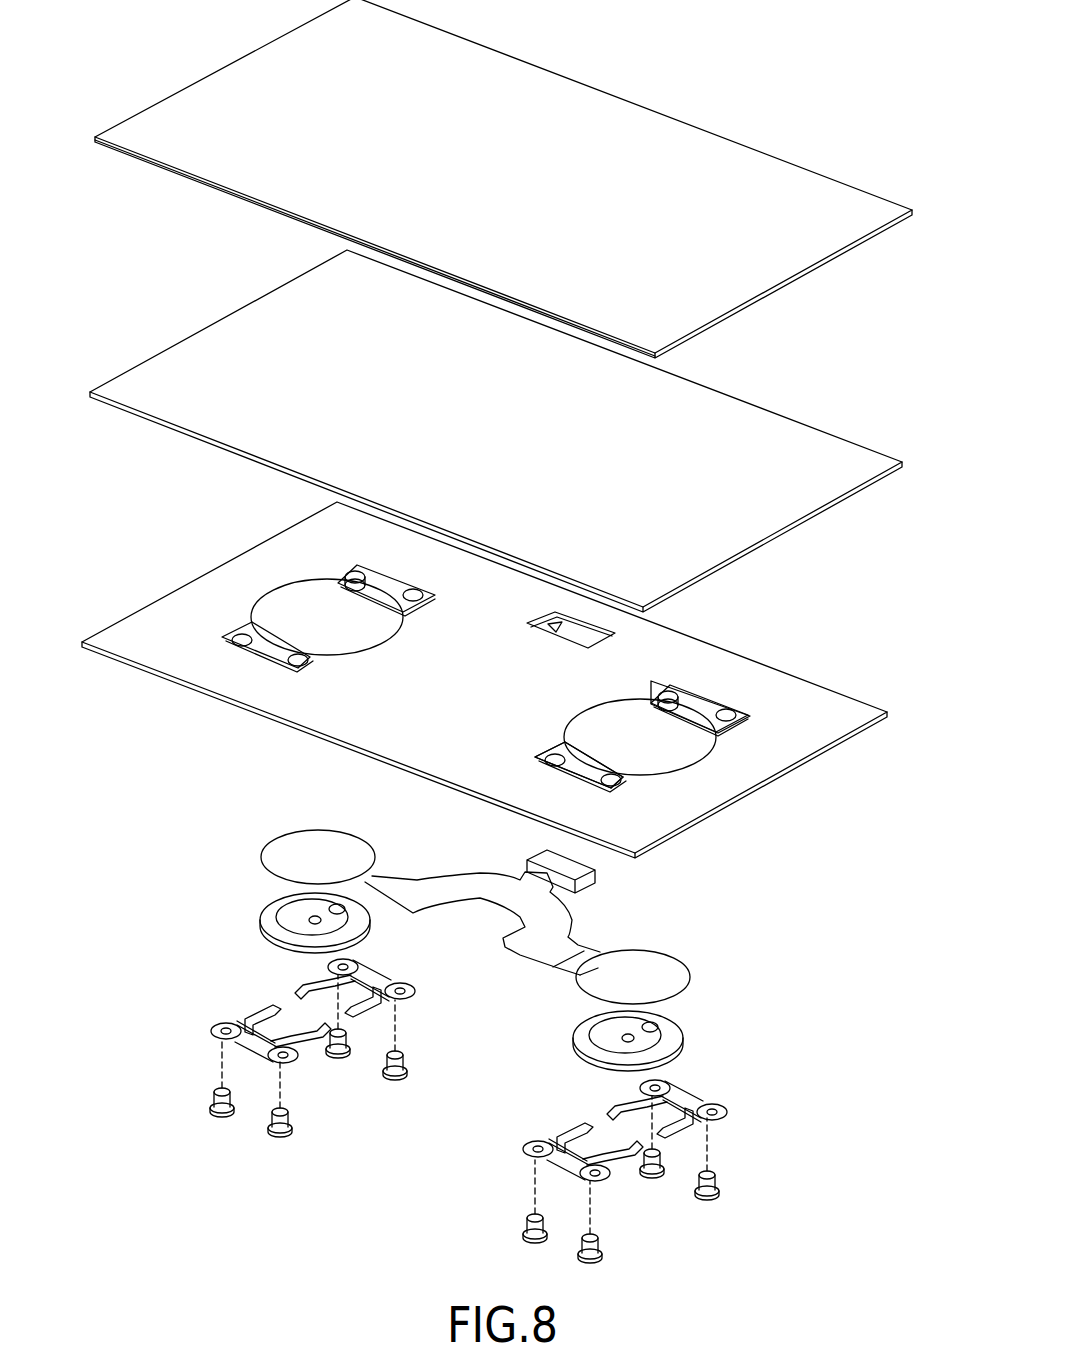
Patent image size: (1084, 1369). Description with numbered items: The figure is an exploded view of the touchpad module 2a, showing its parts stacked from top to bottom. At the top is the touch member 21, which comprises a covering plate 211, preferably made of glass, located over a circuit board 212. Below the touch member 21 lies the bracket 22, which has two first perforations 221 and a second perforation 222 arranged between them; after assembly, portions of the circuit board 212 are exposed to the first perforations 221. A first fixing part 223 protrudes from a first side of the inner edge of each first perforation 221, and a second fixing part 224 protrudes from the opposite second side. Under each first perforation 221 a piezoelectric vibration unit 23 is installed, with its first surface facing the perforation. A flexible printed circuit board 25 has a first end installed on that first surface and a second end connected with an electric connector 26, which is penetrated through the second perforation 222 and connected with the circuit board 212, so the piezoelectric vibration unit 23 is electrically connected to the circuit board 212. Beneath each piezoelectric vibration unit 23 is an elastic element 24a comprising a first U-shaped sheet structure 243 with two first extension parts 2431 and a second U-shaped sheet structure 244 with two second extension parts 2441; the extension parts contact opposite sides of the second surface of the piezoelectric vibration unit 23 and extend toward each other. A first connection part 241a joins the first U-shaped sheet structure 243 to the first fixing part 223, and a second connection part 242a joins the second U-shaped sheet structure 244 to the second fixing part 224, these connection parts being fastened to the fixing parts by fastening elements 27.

The touchpad module 2a is at (790, 77).
The touch member 21 is at (503, 306).
The covering plate 211 is at (812, 192).
The circuit board 212 is at (813, 452).
The bracket 22 is at (484, 680).
The first perforation 221 is at (312, 607).
The second perforation 222 is at (555, 620).
The first fixing part 223 is at (697, 712).
The second fixing part 224 is at (582, 772).
The piezoelectric vibration unit 23 is at (297, 917).
The elastic element 24a is at (559, 997).
The first extension part 2431 is at (601, 975).
The first U-shaped sheet structure 243 is at (630, 1103).
The second extension part 2441 is at (559, 1015).
The second U-shaped sheet structure 244 is at (575, 1130).
The first connection part 241a is at (601, 975).
The second connection part 242a is at (559, 1015).
The flexible printed circuit board 25 is at (485, 907).
The electric connector 26 is at (553, 862).
The fastening element 27 is at (592, 1232).